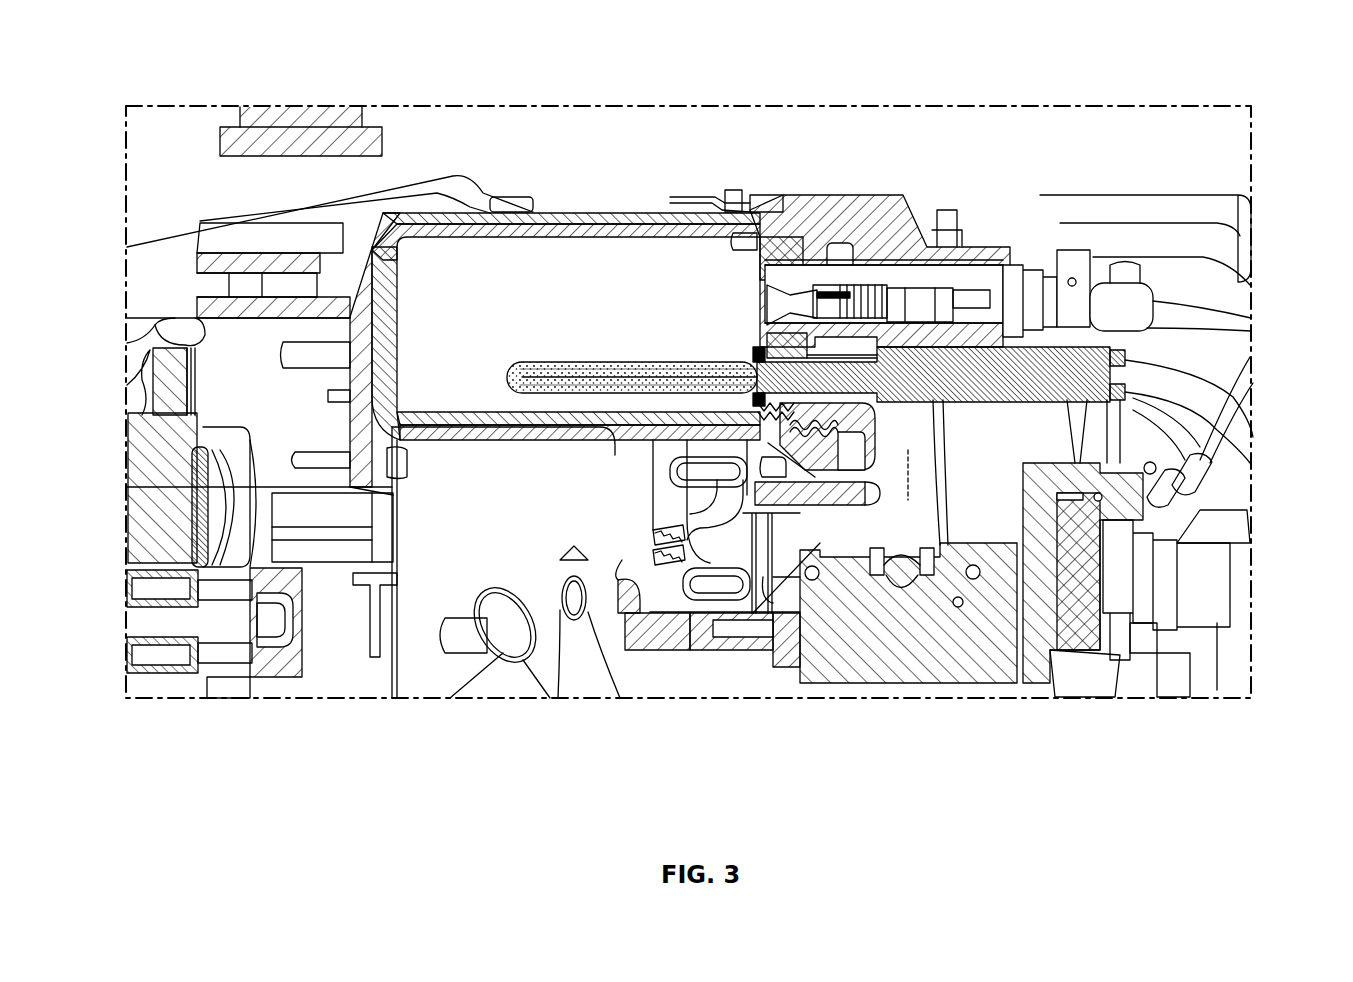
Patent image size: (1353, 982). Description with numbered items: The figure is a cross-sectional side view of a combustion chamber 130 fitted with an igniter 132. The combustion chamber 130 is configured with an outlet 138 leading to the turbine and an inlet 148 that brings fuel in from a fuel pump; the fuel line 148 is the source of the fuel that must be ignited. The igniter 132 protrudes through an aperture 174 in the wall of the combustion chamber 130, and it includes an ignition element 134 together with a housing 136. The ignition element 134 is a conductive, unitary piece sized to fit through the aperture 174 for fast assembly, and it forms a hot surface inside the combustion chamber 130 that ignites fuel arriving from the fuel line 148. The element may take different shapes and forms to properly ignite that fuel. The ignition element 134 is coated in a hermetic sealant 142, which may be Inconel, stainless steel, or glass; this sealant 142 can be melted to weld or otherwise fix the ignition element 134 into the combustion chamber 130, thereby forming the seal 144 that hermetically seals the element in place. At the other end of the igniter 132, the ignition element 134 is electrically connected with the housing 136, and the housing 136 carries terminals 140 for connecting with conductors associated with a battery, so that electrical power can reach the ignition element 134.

The combustion chamber 130 is at (535, 252).
The igniter 132 is at (930, 230).
The ignition element 134 is at (575, 360).
The housing 136 is at (1060, 280).
The outlet 138 is at (152, 255).
The terminals 140 is at (1215, 430).
The hermetic sealant 142 is at (740, 360).
The seal 144 is at (752, 478).
The inlet 148 is at (835, 270).
The aperture 174 is at (760, 440).